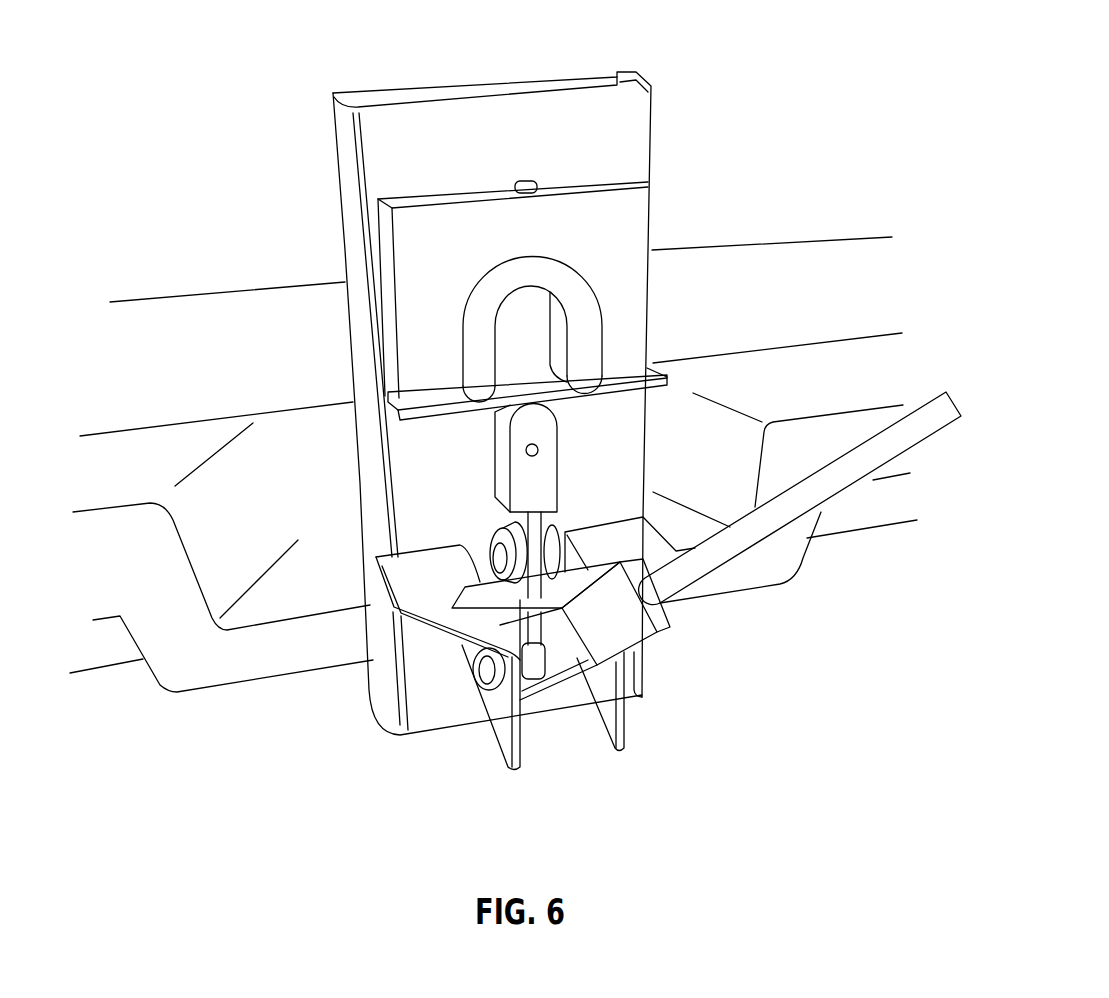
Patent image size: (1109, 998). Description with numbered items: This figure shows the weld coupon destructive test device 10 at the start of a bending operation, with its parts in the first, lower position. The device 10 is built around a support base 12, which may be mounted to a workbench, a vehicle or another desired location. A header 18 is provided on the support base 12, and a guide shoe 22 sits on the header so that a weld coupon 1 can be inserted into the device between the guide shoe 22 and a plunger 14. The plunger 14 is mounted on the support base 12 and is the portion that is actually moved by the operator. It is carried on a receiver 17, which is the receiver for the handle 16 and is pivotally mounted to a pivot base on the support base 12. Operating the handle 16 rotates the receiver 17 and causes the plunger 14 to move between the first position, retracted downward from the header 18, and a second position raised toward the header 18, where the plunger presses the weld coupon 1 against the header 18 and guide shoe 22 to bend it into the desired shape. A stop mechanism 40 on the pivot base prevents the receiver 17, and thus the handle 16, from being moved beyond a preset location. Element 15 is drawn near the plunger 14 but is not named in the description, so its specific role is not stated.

The weld coupon destructive test device 10 is at (700, 85).
The support base 12 is at (353, 162).
The header 18 is at (655, 232).
The guide shoe 22 is at (558, 258).
The weld coupon 1 is at (634, 404).
The tab 15 is at (552, 468).
The plunger 14 is at (535, 533).
The stop mechanism 40 is at (460, 548).
The receiver 17 is at (658, 637).
The handle 16 is at (852, 498).